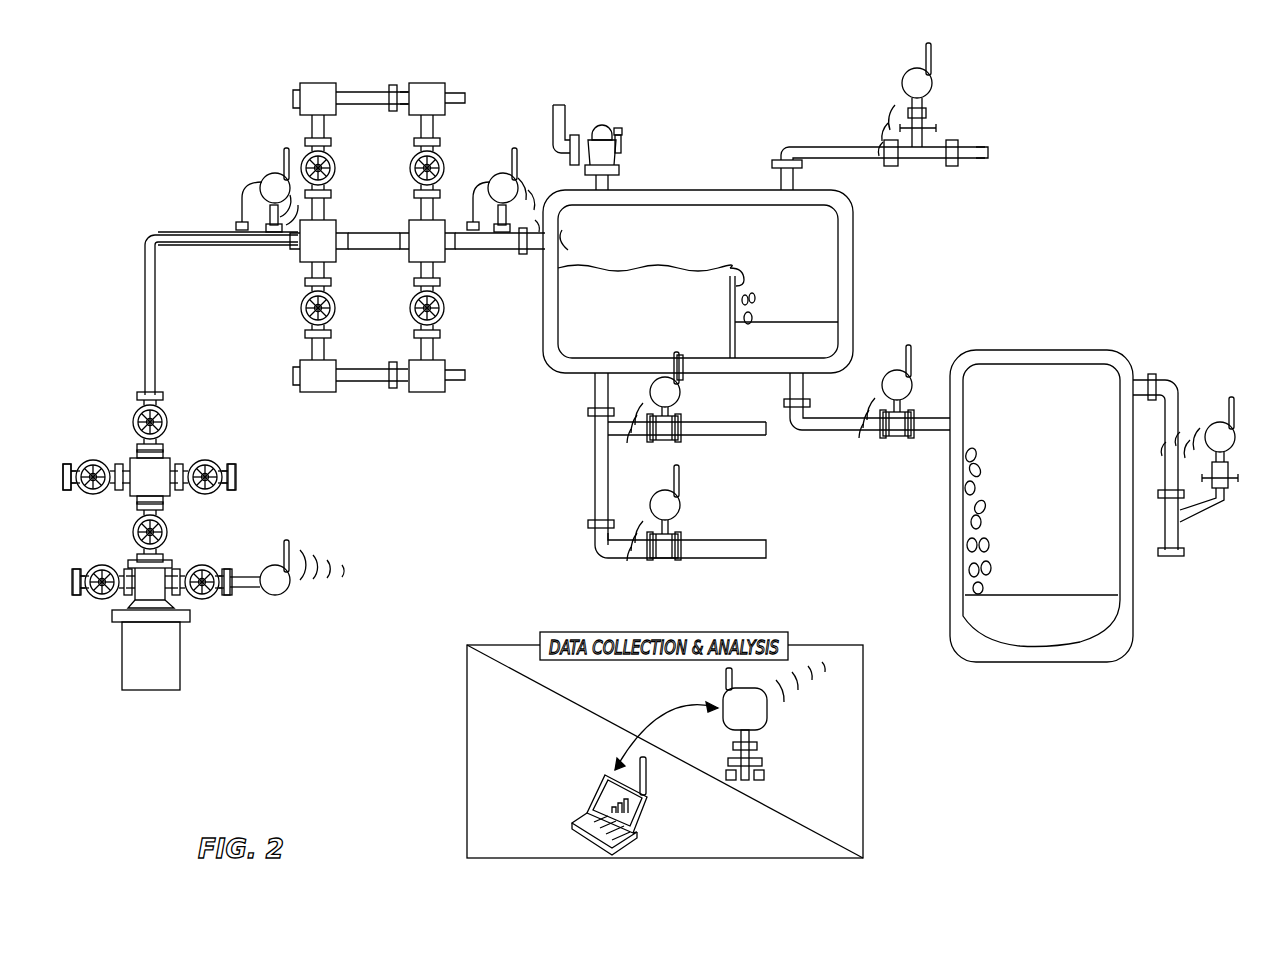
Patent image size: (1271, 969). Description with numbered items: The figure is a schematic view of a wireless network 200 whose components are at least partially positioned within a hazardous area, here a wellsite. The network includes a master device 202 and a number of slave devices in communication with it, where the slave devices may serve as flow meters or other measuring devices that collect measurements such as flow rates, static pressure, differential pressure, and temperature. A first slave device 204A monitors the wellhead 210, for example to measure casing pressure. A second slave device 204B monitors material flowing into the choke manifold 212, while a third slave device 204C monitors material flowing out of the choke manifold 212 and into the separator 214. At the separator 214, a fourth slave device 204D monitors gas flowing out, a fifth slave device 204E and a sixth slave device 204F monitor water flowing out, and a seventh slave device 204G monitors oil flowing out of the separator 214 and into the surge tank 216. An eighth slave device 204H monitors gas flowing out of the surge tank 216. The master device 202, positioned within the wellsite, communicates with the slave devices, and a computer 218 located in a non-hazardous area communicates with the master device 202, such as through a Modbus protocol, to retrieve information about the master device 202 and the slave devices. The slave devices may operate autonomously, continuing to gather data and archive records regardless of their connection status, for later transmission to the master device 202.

The wireless network 200 is at (962, 818).
The master device 202 is at (752, 733).
The first slave device 204A is at (290, 585).
The second slave device 204B is at (272, 176).
The third slave device 204C is at (505, 172).
The fourth slave device 204D is at (904, 86).
The fifth slave device 204E is at (680, 393).
The sixth slave device 204F is at (680, 506).
The seventh slave device 204G is at (892, 370).
The eighth slave device 204H is at (1218, 422).
The wellhead 210 is at (180, 655).
The choke manifold 212 is at (392, 238).
The separator 214 is at (688, 200).
The surge tank 216 is at (1043, 356).
The computer 218 is at (587, 810).